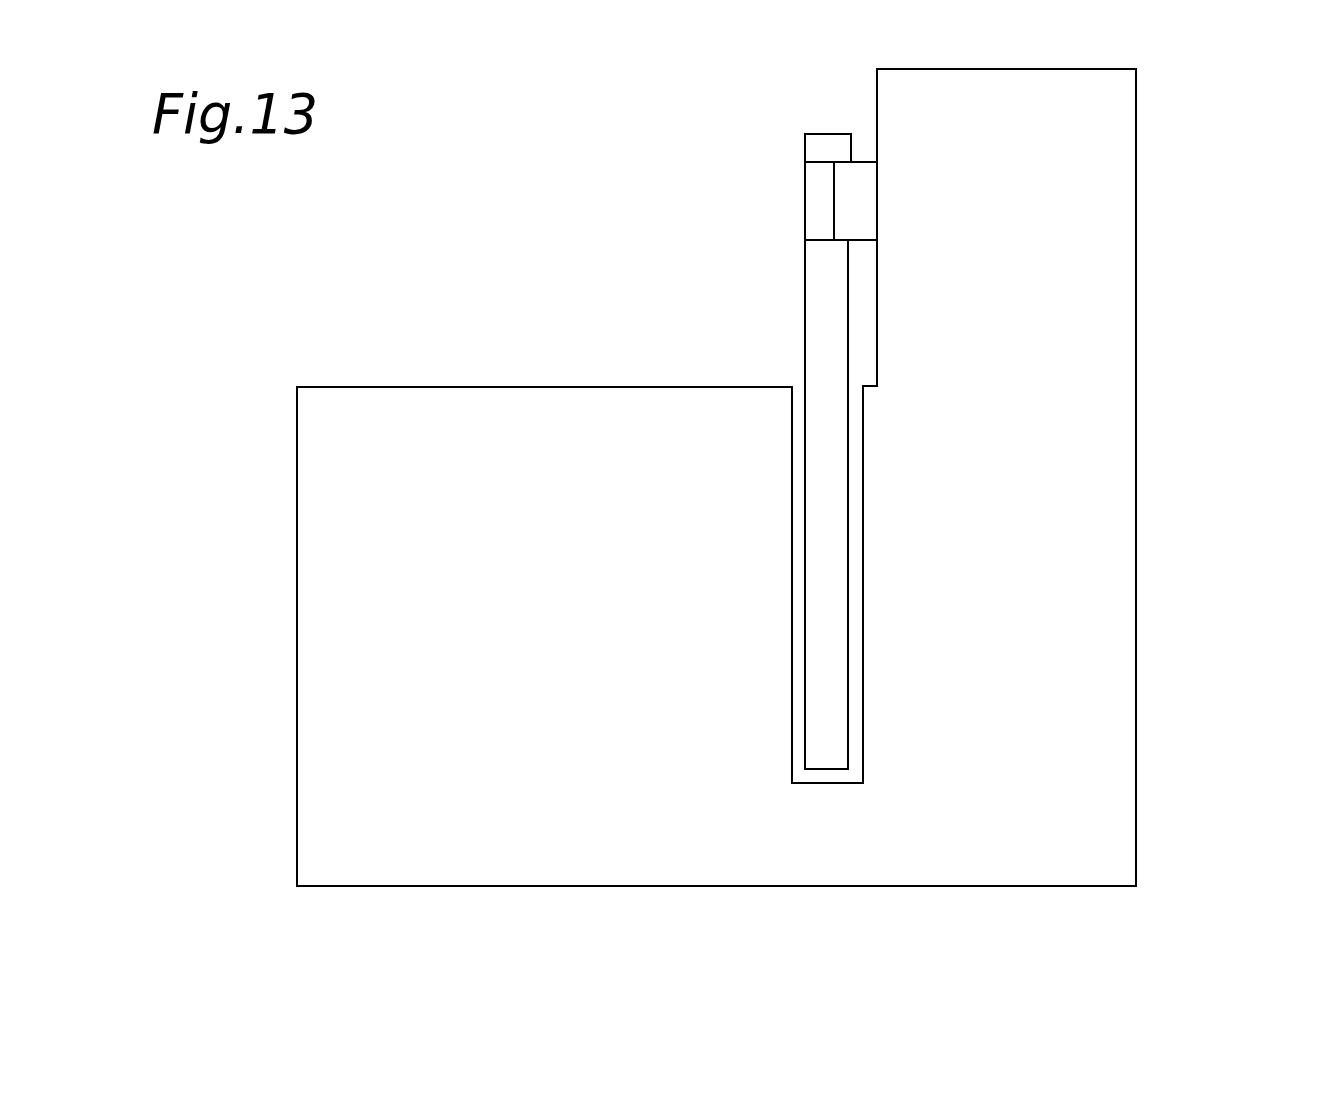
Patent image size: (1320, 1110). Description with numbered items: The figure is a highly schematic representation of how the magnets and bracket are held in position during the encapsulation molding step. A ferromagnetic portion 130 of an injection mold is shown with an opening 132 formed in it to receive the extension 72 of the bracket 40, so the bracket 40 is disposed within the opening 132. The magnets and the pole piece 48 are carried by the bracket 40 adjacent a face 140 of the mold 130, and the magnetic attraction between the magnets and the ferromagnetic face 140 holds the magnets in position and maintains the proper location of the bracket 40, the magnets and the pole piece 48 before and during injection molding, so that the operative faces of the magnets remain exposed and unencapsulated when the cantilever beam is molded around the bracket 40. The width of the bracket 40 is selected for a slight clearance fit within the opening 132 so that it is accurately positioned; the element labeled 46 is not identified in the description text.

The ferromagnetic portion of an injection mold 130 is at (460, 407).
The opening 132 is at (848, 774).
The face of the mold 140 is at (877, 106).
The bracket 40 is at (827, 385).
The pole piece 48 is at (821, 187).
The collar portion 46 is at (855, 225).
The extension of the bracket 72 is at (822, 621).